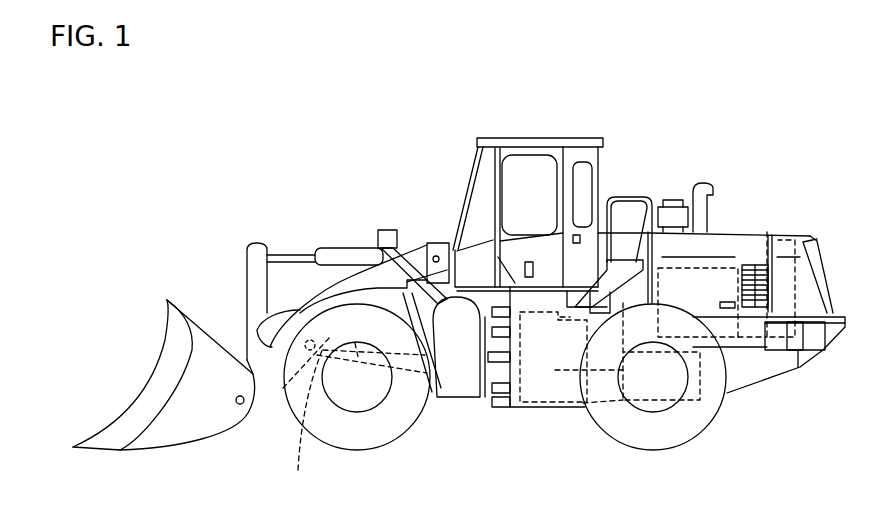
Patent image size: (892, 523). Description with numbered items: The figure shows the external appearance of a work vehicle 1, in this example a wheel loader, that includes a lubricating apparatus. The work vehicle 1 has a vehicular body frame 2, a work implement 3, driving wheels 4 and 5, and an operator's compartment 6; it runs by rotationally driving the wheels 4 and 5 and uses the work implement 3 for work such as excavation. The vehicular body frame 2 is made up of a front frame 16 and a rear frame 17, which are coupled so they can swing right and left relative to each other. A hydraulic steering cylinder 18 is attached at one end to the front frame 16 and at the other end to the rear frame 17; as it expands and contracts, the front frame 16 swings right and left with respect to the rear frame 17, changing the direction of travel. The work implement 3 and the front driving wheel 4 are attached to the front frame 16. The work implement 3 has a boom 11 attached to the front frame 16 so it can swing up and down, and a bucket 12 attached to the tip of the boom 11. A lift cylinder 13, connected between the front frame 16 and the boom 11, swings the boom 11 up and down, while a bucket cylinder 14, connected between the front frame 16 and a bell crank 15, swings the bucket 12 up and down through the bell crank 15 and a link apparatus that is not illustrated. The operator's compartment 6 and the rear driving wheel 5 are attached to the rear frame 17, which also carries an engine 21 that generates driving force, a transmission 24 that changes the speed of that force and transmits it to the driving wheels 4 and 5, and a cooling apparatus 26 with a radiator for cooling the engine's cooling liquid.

The work vehicle 1 is at (703, 100).
The vehicular body frame 2 is at (532, 430).
The work implement 3 is at (188, 281).
The driving wheel 4 is at (352, 430).
The driving wheel 5 is at (648, 430).
The operator's compartment 6 is at (581, 140).
The boom 11 is at (300, 312).
The bucket 12 is at (150, 385).
The lift cylinder 13 is at (355, 416).
The bucket cylinder 14 is at (335, 250).
The bell crank 15 is at (250, 284).
The front frame 16 is at (455, 388).
The rear frame 17 is at (750, 387).
The steering cylinder 18 is at (498, 360).
The engine 21 is at (723, 268).
The transmission 24 is at (561, 386).
The cooling apparatus 26 is at (781, 240).